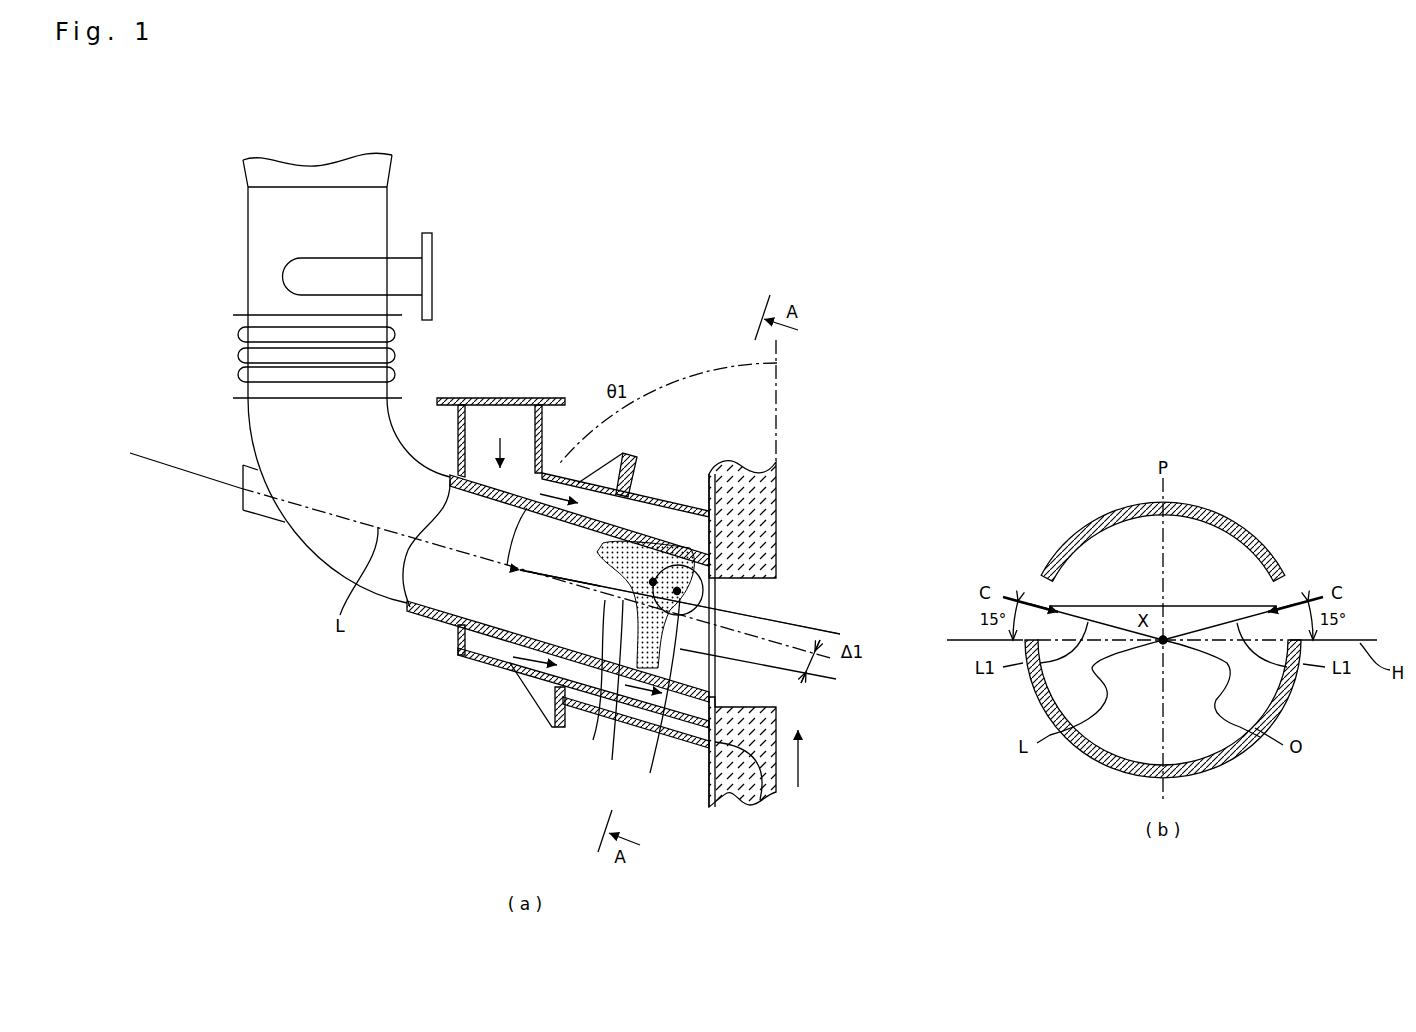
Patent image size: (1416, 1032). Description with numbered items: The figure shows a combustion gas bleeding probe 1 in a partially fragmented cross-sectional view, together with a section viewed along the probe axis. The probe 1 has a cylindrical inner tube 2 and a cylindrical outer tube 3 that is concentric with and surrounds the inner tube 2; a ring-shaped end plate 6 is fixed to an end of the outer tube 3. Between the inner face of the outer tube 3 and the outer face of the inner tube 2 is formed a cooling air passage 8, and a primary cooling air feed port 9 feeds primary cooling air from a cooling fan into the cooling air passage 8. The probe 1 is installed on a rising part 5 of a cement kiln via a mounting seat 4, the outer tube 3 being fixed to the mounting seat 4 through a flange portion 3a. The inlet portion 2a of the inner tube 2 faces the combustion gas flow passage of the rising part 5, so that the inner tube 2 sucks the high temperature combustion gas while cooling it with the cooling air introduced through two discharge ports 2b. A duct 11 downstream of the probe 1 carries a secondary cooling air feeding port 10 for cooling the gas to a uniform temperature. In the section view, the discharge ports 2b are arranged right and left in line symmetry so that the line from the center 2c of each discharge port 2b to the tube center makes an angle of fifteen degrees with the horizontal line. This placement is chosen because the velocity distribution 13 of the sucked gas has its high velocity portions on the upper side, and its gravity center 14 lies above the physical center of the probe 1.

The combustion gas bleeding probe 1 is at (457, 807).
The inner tube 2 is at (508, 664).
The inlet portion 2a is at (717, 660).
The discharge ports 2b is at (715, 594).
The center of the discharge port 2c is at (650, 750).
The outer tube 3 is at (465, 660).
The flange portion 3a is at (550, 708).
The mounting seat 4 is at (640, 737).
The rising part 5 is at (708, 787).
The end plate 6 is at (757, 800).
The cooling air passage 8 is at (647, 525).
The primary cooling air feed port 9 is at (500, 398).
The secondary cooling air feeding port 10 is at (435, 277).
The duct 11 is at (245, 305).
The velocity distribution 13 is at (593, 740).
The gravity center 14 is at (597, 690).